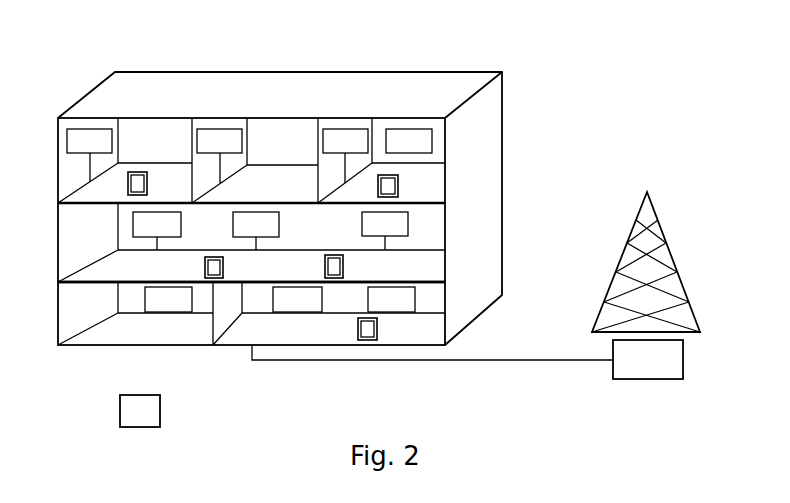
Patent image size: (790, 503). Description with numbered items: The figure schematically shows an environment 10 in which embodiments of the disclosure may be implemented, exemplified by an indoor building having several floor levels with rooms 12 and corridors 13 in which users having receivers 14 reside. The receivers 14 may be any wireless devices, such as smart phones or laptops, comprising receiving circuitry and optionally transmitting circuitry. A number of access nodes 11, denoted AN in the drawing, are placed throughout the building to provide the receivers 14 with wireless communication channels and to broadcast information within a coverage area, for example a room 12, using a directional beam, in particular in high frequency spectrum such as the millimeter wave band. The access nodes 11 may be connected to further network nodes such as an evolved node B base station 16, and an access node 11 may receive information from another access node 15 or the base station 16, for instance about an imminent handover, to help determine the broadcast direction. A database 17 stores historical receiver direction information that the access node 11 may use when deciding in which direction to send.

The environment 10 is at (524, 70).
The access node 11 is at (73, 138).
The room 12 is at (135, 147).
The corridor 13 is at (92, 275).
The receiver 14 is at (281, 256).
The other access node 15 is at (415, 297).
The eNB 16 is at (683, 355).
The database 17 is at (150, 412).